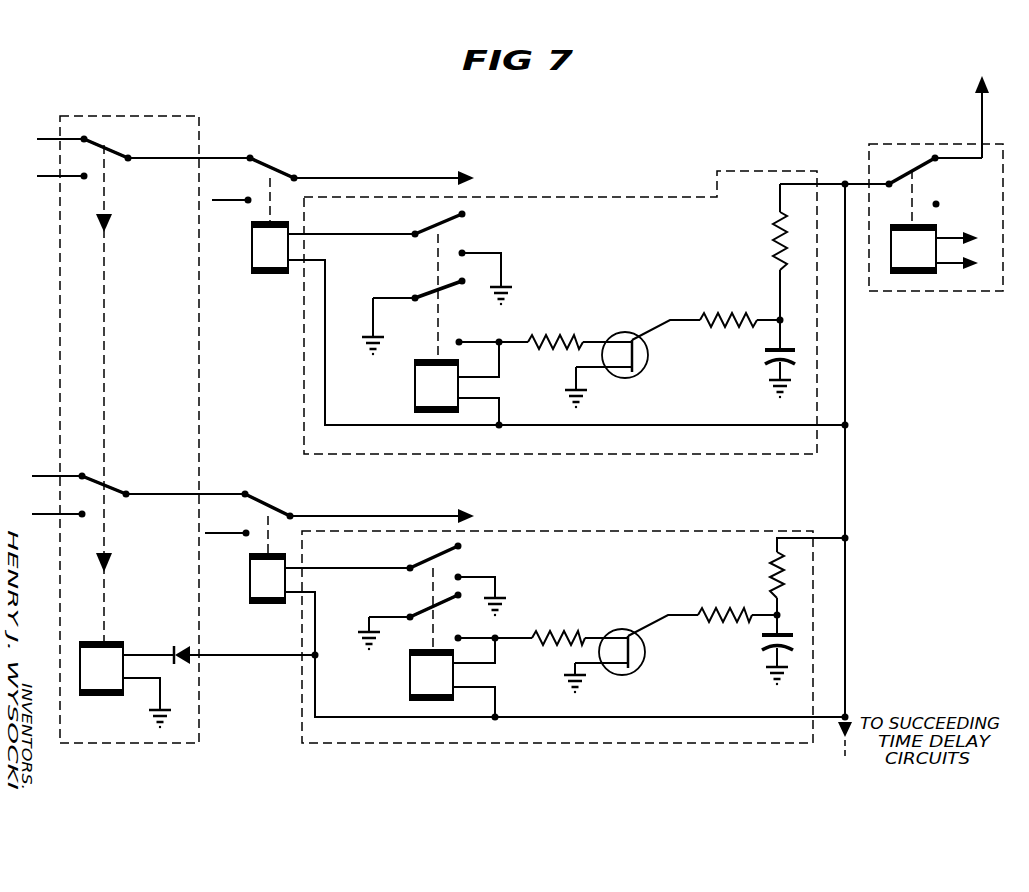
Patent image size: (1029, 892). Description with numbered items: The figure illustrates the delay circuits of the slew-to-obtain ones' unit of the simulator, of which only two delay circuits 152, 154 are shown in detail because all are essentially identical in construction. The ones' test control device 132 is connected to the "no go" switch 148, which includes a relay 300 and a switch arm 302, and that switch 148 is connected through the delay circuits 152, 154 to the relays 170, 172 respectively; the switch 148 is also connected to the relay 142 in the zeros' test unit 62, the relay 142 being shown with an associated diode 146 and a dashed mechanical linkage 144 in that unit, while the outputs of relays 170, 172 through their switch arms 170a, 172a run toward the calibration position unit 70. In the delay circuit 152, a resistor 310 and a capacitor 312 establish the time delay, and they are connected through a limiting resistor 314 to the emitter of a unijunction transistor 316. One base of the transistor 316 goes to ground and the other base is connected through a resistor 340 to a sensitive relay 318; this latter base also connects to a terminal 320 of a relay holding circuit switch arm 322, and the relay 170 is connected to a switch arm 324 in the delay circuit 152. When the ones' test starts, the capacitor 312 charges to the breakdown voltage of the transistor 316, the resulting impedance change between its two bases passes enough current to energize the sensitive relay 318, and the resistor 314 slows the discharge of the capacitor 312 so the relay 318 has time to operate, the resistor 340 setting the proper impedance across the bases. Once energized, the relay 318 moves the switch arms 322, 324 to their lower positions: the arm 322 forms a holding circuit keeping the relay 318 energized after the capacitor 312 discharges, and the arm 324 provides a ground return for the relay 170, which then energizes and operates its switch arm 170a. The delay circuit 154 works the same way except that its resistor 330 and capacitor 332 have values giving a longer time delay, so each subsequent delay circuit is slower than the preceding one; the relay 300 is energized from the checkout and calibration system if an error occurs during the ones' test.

The zeros' test unit 62 is at (173, 116).
The mechanical linkage of selector switch 144 is at (106, 318).
The relay 170 is at (252, 253).
The switch arm 170a is at (274, 171).
The calibration position unit 70 is at (440, 326).
The delay circuit 152 is at (671, 198).
The switch arm 324 is at (445, 217).
The relay holding circuit switch arm 322 is at (433, 288).
The terminal 320 is at (459, 341).
The sensitive relay 318 is at (415, 385).
The resistor 340 is at (556, 336).
The unijunction transistor 316 is at (621, 333).
The limiting resistor 314 is at (712, 319).
The resistor 310 is at (772, 232).
The capacitor 312 is at (766, 350).
The "no go" switch 148 is at (952, 293).
The switch arm 302 is at (922, 169).
The ones' test control device 132 is at (913, 109).
The relay 300 is at (906, 273).
The relay 172 is at (250, 574).
The relay switch contact 172a is at (272, 511).
The relay 142 is at (104, 695).
The diode 146 is at (175, 649).
The delay circuit 154 is at (730, 531).
The resistor 330 is at (770, 567).
The capacitor 332 is at (762, 636).